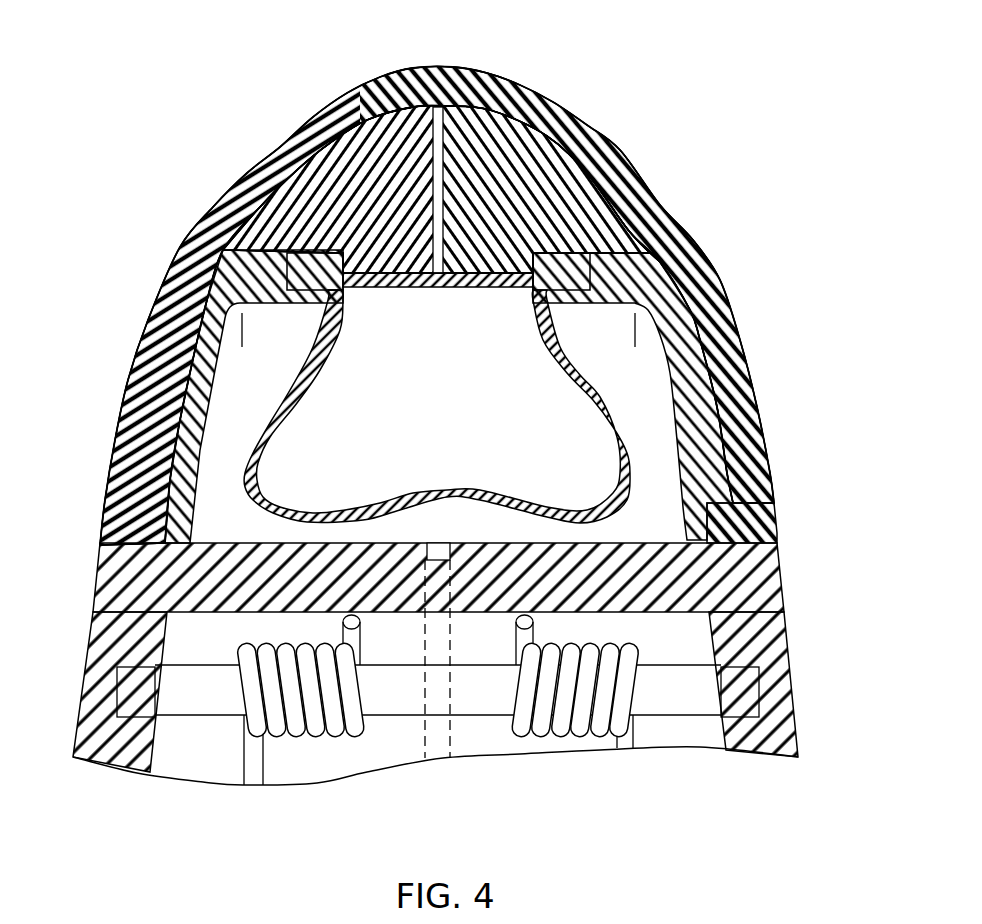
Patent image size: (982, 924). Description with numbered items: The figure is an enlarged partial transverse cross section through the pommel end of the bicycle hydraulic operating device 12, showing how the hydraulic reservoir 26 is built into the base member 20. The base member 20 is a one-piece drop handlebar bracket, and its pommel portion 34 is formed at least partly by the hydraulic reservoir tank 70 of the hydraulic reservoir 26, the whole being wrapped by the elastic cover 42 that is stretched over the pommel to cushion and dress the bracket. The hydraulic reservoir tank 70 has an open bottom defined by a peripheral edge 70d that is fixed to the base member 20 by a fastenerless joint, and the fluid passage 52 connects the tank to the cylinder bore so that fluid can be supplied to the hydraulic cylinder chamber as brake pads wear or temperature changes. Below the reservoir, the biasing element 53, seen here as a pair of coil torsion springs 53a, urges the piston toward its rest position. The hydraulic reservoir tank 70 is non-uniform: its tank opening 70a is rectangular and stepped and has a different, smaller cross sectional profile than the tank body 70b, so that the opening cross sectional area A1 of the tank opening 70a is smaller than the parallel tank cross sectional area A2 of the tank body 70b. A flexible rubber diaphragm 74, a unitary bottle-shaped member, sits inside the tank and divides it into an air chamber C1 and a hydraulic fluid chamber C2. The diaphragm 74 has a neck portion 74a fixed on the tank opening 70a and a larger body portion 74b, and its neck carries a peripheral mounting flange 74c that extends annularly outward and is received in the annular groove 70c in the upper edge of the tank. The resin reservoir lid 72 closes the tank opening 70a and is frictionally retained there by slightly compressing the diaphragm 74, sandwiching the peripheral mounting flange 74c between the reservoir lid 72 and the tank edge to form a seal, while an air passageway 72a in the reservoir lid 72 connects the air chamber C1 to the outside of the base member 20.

The bicycle hydraulic operating device 12 is at (196, 78).
The base member 20 is at (80, 710).
The hydraulic reservoir 26 is at (165, 381).
The pommel portion 34 is at (98, 583).
The cover 42 is at (568, 122).
The fluid passage 52 is at (423, 643).
The biasing element 53 is at (438, 751).
The coil torsion springs 53a is at (547, 818).
The hydraulic reservoir tank 70 is at (727, 421).
The tank opening 70a is at (338, 291).
The tank body 70b is at (177, 447).
The annular groove 70c is at (440, 340).
The peripheral edge 70d is at (710, 577).
The reservoir lid 72 is at (598, 183).
The air passageway 72a is at (425, 130).
The diaphragm 74 is at (607, 392).
The neck portion 74a is at (440, 340).
The body portion 74b is at (262, 422).
The peripheral mounting flange 74c is at (572, 270).
The opening cross sectional area A1 is at (505, 275).
The tank cross sectional area A2 is at (392, 341).
The air chamber C1 is at (413, 462).
The hydraulic fluid chamber C2 is at (207, 529).